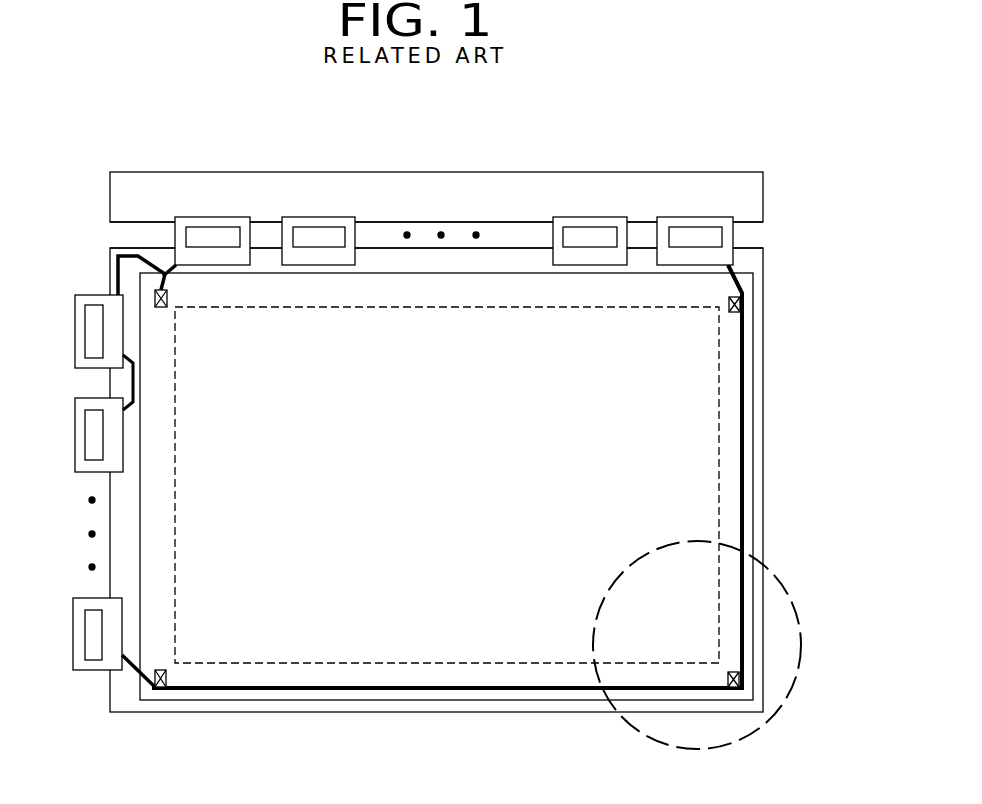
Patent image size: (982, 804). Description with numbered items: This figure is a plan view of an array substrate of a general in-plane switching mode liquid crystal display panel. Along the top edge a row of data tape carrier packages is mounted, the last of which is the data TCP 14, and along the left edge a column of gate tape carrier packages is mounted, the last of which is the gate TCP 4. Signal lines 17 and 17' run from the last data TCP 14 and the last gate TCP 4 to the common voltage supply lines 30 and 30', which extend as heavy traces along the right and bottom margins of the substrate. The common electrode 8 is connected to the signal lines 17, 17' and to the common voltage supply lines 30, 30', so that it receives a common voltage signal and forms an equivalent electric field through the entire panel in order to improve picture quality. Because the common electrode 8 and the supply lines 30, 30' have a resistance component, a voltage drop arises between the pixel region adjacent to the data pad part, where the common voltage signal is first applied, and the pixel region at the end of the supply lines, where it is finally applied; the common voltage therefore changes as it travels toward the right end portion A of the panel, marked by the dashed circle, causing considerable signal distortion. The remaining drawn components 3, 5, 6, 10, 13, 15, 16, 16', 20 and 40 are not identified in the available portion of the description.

The gate driver tape carrier package 3 is at (85, 437).
The last gate TCP 4 is at (76, 327).
The data driver film strip 5 is at (382, 260).
The gate driver tape carrier package 6 is at (123, 583).
The common electrode 8 is at (527, 273).
The liquid crystal display panel 10 is at (757, 262).
The data driver IC 13 is at (320, 223).
The last data TCP 14 is at (222, 217).
The printed circuit board 15 is at (175, 178).
The ground line connection 16 is at (86, 275).
The ground line connection 16' is at (68, 382).
The signal line 17 is at (107, 231).
The signal line 17' is at (121, 716).
The display area 20 is at (720, 515).
The common voltage supply line 30 is at (485, 476).
The common voltage supply line 30' is at (447, 732).
The ground contact 40 is at (160, 687).
The right end portion A is at (795, 598).